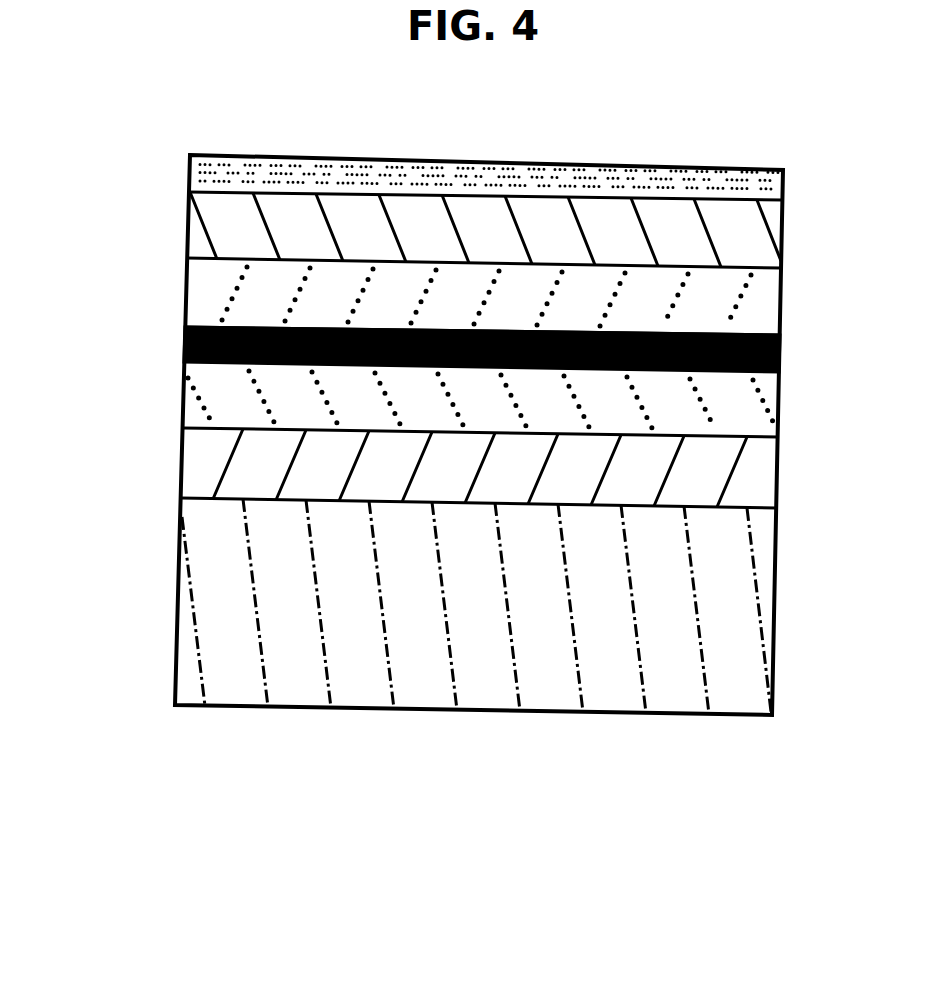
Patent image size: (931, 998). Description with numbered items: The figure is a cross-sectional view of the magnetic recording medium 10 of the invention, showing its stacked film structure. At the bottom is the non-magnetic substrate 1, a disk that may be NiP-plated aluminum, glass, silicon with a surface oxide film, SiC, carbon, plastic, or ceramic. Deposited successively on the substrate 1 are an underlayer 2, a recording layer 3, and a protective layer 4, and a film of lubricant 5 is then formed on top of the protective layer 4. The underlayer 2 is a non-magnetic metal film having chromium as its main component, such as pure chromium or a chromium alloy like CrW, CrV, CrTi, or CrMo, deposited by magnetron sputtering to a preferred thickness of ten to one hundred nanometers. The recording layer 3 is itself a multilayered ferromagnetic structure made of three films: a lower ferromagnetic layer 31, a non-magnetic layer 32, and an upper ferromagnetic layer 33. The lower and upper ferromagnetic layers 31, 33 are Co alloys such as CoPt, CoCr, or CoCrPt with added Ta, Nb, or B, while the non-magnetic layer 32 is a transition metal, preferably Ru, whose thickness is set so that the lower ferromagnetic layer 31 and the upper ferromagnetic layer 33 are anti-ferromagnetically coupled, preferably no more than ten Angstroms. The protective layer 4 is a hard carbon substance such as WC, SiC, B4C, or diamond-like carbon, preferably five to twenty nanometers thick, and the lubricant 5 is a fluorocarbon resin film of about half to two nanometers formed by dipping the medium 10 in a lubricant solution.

The non-magnetic substrate 1 is at (177, 600).
The underlayer 2 is at (182, 460).
The recording layer 3 is at (82, 265).
The lower ferromagnetic layer 31 is at (190, 372).
The non-magnetic layer 32 is at (190, 335).
The upper ferromagnetic layer 33 is at (190, 295).
The protective layer 4 is at (190, 228).
The lubricant 5 is at (190, 164).
The magnetic recording medium 10 is at (393, 471).